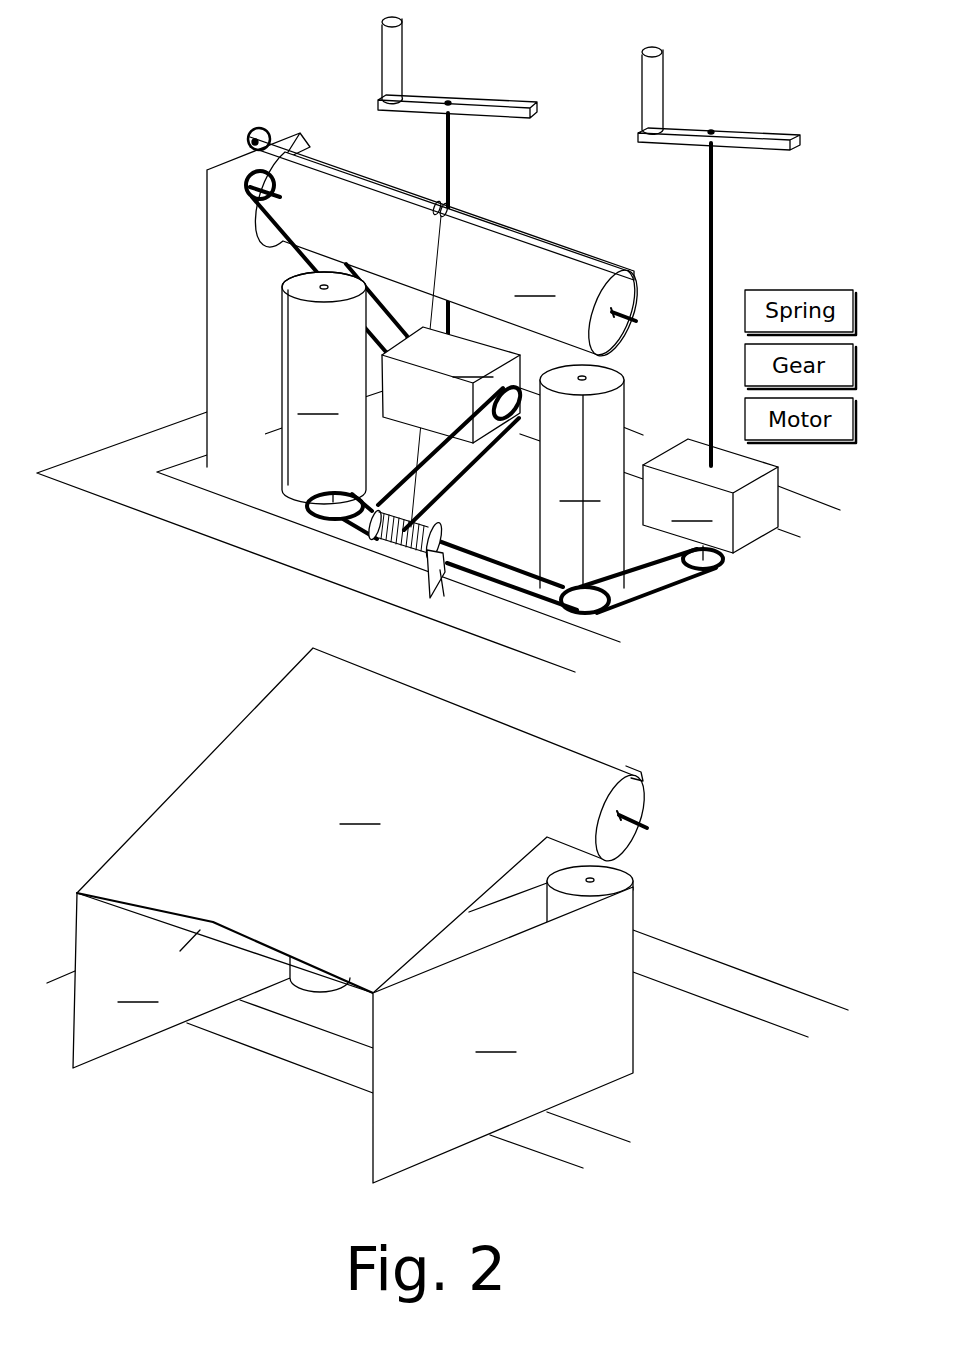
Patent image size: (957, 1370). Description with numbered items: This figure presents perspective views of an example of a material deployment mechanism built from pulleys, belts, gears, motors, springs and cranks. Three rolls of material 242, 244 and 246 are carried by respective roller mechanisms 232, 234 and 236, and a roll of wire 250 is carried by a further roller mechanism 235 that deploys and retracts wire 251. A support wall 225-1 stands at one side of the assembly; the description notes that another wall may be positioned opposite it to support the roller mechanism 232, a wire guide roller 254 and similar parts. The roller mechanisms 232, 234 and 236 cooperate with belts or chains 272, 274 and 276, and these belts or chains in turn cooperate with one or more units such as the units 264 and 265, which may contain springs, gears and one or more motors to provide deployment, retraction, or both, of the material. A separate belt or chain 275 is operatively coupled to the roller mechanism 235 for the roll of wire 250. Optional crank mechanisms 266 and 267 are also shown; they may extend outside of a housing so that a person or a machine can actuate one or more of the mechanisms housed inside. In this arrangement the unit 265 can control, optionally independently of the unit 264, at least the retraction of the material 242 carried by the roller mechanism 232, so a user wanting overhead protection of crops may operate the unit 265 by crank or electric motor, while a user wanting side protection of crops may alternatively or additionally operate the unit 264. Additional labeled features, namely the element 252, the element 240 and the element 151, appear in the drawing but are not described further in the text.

The crank mechanism 267 is at (490, 101).
The crank mechanism 266 is at (748, 133).
The roller shaft 252 is at (256, 133).
The wire guide roller 254 is at (435, 204).
The roller mechanism 232 is at (634, 320).
The roll of material 242 is at (365, 572).
The belt or chain 272 is at (283, 263).
The support wall 225-1 is at (207, 348).
The roll of material 246 is at (223, 670).
The unit 265 is at (451, 385).
The roll of material 244 is at (503, 774).
The unit 264 is at (710, 496).
The base plate 240 is at (145, 513).
The roller mechanism 236 is at (307, 502).
The belt or chain 276 is at (340, 527).
The wire 251 is at (392, 540).
The roll of wire 250 is at (430, 553).
The roller mechanism 235 is at (444, 598).
The belt or chain 275 is at (444, 476).
The belt or chain 274 is at (673, 587).
The roller mechanism 234 is at (607, 614).
The housing 151 is at (200, 930).